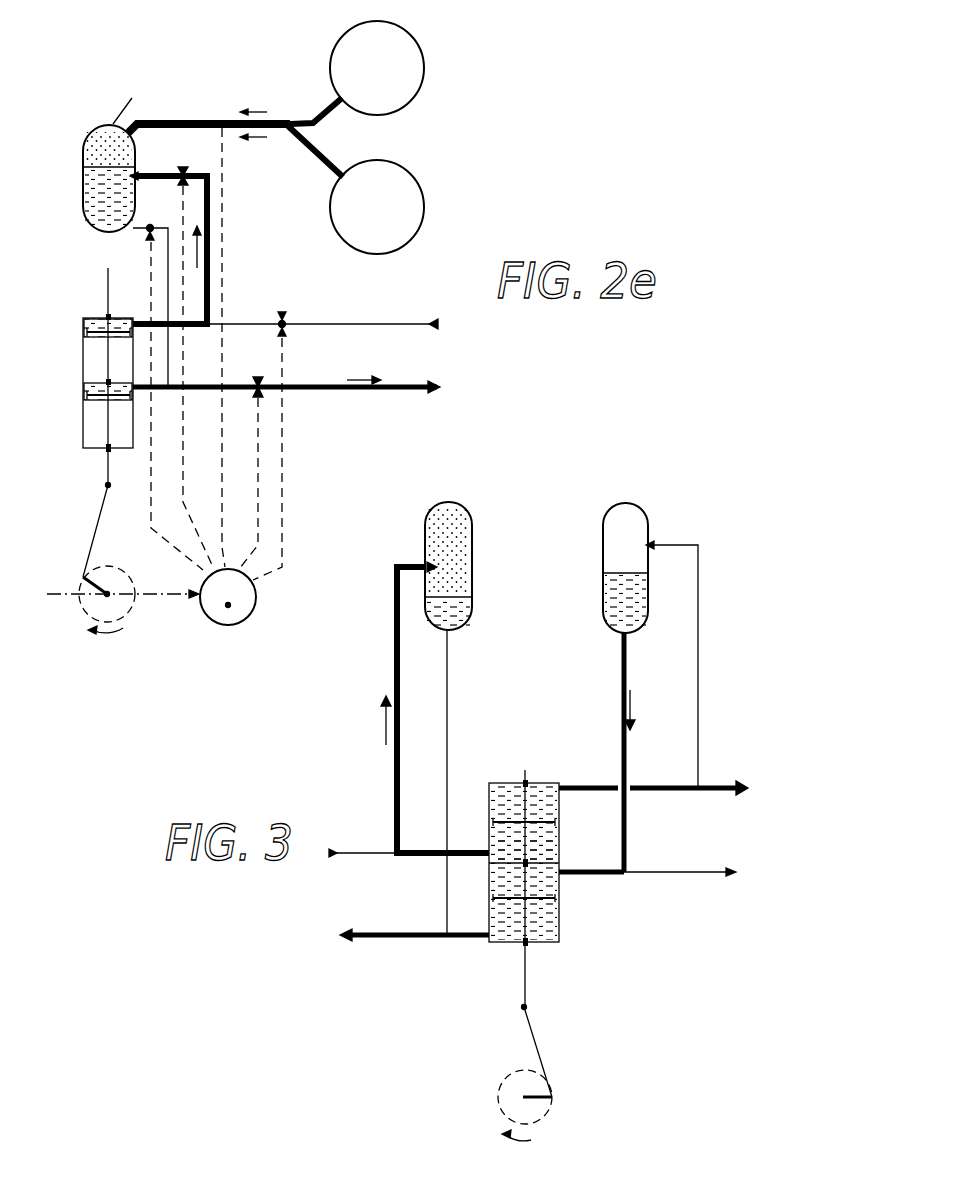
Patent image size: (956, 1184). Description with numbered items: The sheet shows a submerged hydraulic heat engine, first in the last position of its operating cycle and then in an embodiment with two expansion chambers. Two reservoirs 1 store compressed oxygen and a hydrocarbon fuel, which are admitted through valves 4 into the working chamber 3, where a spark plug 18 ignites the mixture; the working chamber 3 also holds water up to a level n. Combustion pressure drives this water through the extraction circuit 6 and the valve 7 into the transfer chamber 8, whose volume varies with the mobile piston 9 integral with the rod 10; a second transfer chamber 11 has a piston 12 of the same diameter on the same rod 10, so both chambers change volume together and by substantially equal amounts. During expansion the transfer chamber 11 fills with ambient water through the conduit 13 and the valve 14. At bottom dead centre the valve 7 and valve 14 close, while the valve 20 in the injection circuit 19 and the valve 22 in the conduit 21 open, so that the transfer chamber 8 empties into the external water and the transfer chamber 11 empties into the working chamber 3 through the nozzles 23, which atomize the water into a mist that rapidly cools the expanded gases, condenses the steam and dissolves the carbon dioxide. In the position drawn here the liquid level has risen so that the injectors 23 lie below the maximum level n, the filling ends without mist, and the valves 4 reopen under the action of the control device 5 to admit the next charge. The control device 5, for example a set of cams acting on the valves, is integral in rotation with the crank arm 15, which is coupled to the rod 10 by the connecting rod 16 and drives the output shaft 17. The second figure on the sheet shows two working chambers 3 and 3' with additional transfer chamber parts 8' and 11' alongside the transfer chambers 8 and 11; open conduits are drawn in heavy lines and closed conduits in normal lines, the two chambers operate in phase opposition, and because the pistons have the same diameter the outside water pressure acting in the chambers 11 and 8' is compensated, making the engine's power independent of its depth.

In FIG. 2E, the reservoir 1 is at (405, 55).
In FIG. 2E, the working chamber 3 is at (91, 178).
In FIG. 3, the working chamber 3 is at (639, 687).
In FIG. 3, the second working chamber 3' is at (442, 718).
In FIG. 2E, the valve 4 is at (222, 120).
In FIG. 2E, the control device 5 is at (228, 597).
In FIG. 2E, the extraction circuit 6 is at (167, 259).
In FIG. 2E, the valve 7 is at (151, 226).
In FIG. 2E, the transfer chamber 8 is at (92, 393).
In FIG. 3, the transfer chamber 8 is at (539, 891).
In FIG. 3, the additional transfer chamber part 8' is at (538, 955).
In FIG. 2E, the mobile piston 9 is at (100, 400).
In FIG. 2E, the rod 10 is at (107, 468).
In FIG. 2E, the transfer chamber 11 is at (88, 319).
In FIG. 3, the transfer chamber 11 is at (547, 810).
In FIG. 3, the additional transfer chamber part 11' is at (547, 847).
In FIG. 2E, the piston 12 is at (98, 335).
In FIG. 2E, the conduit 13 is at (244, 322).
In FIG. 2E, the valve 14 is at (285, 322).
In FIG. 2E, the crank arm 15 is at (103, 588).
In FIG. 2E, the connecting rod 16 is at (95, 528).
In FIG. 2E, the output shaft 17 is at (52, 590).
In FIG. 2E, the spark plug 18 is at (112, 127).
In FIG. 2E, the injection circuit 19 is at (211, 204).
In FIG. 2E, the valve 20 is at (184, 170).
In FIG. 2E, the conduit 21 is at (322, 383).
In FIG. 2E, the valve 22 is at (258, 382).
In FIG. 2E, the nozzle 23 is at (138, 174).